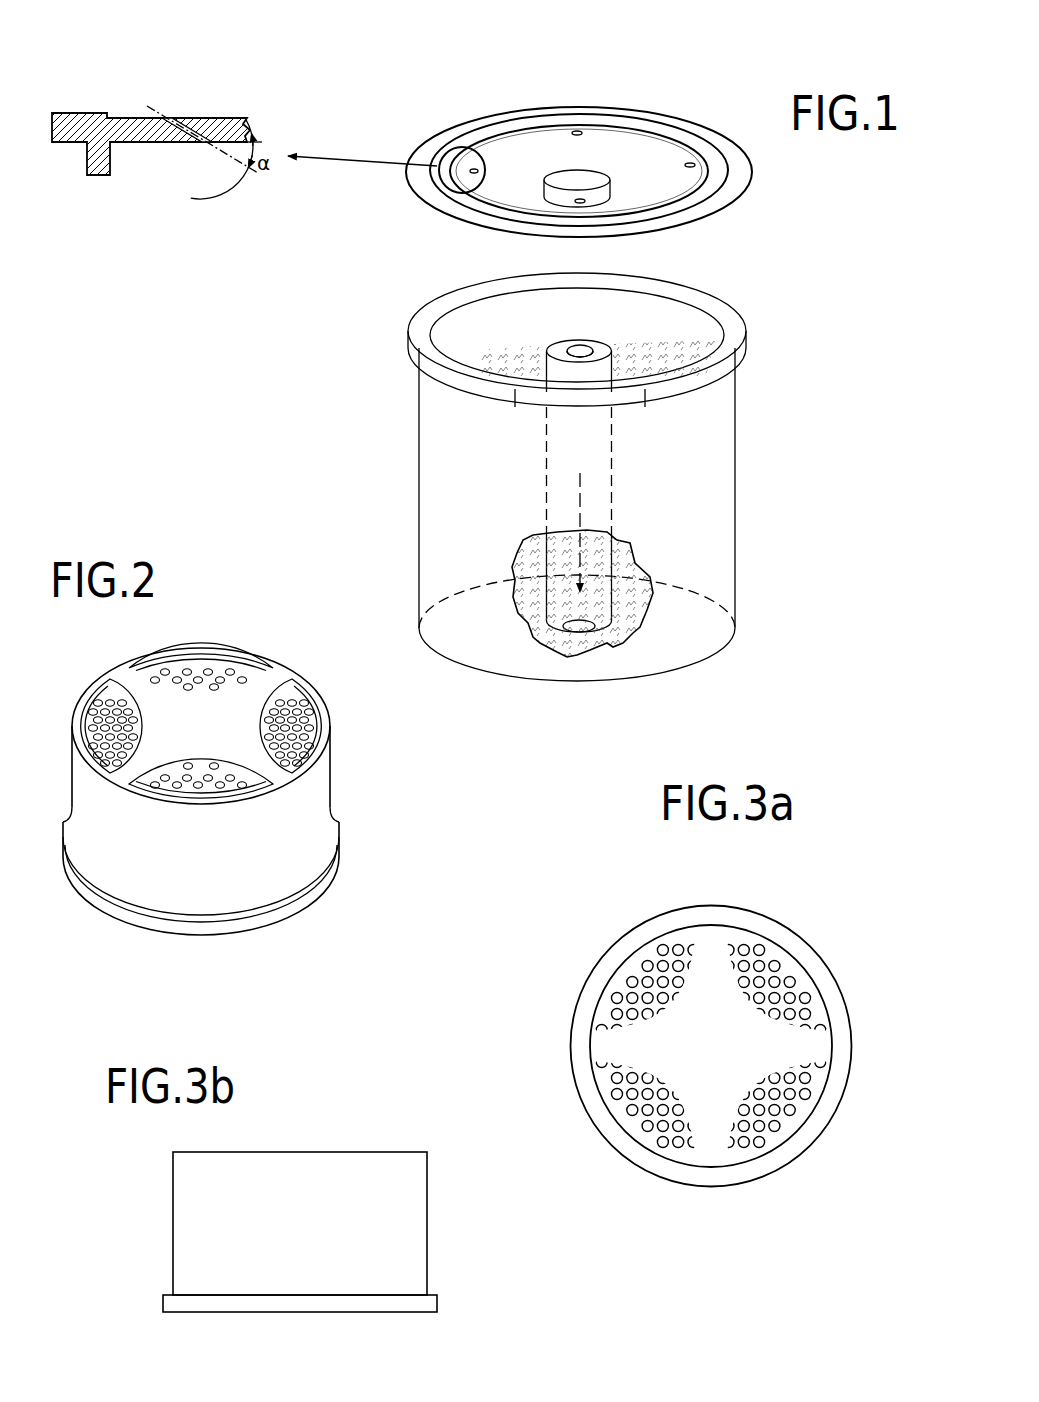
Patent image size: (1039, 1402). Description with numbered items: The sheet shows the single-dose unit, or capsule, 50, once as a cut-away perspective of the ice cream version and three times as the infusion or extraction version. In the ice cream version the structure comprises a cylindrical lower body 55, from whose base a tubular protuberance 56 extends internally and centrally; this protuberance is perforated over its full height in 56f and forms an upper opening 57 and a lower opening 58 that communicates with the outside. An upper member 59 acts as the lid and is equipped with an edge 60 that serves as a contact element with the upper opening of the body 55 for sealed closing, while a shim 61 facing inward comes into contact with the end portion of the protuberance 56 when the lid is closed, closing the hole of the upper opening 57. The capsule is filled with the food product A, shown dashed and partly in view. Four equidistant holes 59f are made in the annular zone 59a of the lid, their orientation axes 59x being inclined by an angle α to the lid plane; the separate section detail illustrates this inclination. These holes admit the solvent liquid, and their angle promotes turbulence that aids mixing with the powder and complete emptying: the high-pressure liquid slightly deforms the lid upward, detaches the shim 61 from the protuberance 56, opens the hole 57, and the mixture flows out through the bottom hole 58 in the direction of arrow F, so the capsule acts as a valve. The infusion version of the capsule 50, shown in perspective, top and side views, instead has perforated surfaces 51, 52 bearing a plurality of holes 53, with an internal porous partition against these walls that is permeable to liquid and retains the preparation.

In FIG. 1, the single-dose unit 50 is at (596, 497).
In FIG. 2, the single-dose unit 50 is at (193, 750).
In FIG. 3a, the single-dose unit 50 is at (682, 1065).
In FIG. 3b, the single-dose unit 50 is at (309, 1210).
In FIG. 2, the perforated surface 51 is at (316, 731).
In FIG. 3a, the perforated surface 51 is at (816, 1011).
In FIG. 3b, the perforated surface 52 is at (368, 1317).
In FIG. 2, the holes 53 is at (210, 670).
In FIG. 3a, the holes 53 is at (790, 1098).
In FIG. 1, the lower body 55 is at (722, 548).
In FIG. 1, the tubular protuberance 56 is at (557, 372).
In FIG. 1, the perforation 56f is at (588, 344).
In FIG. 1, the upper opening 57 is at (570, 344).
In FIG. 1, the lower opening 58 is at (592, 637).
In FIG. 1, the upper member 59 is at (718, 116).
In FIG. 1, the annular zone 59a is at (116, 110).
In FIG. 1, the holes 59f is at (193, 117).
In FIG. 1, the orientation axes 59x is at (147, 106).
In FIG. 1, the edge 60 is at (447, 133).
In FIG. 1, the shim 61 is at (610, 197).
In FIG. 1, the food product A is at (682, 350).
In FIG. 1, the arrow F is at (580, 632).